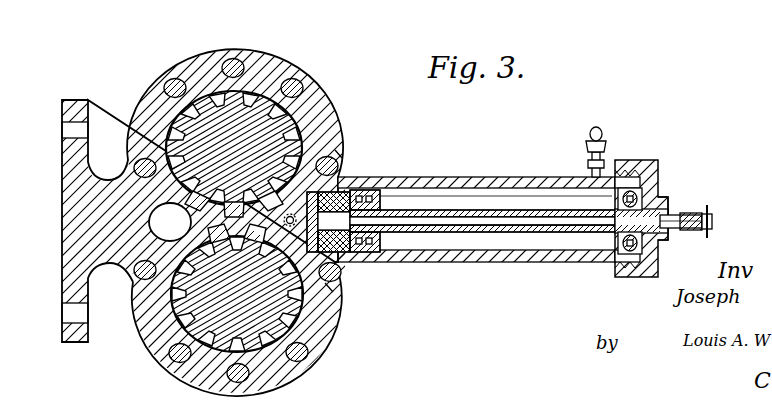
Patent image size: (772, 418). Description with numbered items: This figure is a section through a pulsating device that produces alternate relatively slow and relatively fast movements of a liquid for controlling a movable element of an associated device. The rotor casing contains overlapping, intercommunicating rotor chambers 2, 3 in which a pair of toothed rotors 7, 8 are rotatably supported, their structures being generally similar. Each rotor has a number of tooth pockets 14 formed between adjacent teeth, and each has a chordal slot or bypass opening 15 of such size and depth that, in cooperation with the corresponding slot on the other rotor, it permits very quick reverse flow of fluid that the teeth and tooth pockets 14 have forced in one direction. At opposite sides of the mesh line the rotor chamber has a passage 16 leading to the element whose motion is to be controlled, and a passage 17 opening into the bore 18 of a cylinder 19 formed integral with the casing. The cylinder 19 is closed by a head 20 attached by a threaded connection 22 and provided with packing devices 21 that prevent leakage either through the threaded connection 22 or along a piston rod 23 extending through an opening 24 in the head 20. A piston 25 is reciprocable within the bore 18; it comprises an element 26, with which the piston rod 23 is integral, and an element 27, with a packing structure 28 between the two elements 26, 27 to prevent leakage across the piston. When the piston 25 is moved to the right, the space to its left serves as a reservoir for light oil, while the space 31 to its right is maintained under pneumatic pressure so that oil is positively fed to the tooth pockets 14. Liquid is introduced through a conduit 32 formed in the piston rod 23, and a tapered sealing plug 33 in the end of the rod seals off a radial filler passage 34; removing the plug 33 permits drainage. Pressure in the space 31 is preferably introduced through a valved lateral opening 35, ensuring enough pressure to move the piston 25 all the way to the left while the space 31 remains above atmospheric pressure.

The rotor chamber 2 is at (300, 118).
The rotor chamber 3 is at (292, 310).
The rotor 7 is at (232, 98).
The rotor 8 is at (295, 325).
The tooth pockets 14 is at (292, 112).
The bypass opening 15 is at (332, 150).
The passage 16 is at (165, 220).
The passage 17 is at (352, 252).
The bore 18 is at (432, 186).
The cylinder 19 is at (472, 264).
The head 20 is at (650, 168).
The packing devices 21 is at (663, 200).
The threaded connection 22 is at (620, 188).
The piston rod 23 is at (520, 210).
The opening 24 is at (666, 217).
The piston 25 is at (375, 252).
The element 26 is at (352, 192).
The element 27 is at (372, 196).
The packing structure 28 is at (346, 200).
The space 31 is at (562, 198).
The conduit 32 is at (540, 234).
The tapered sealing plug 33 is at (712, 226).
The radial filler passage 34 is at (698, 220).
The valved lateral opening 35 is at (603, 146).